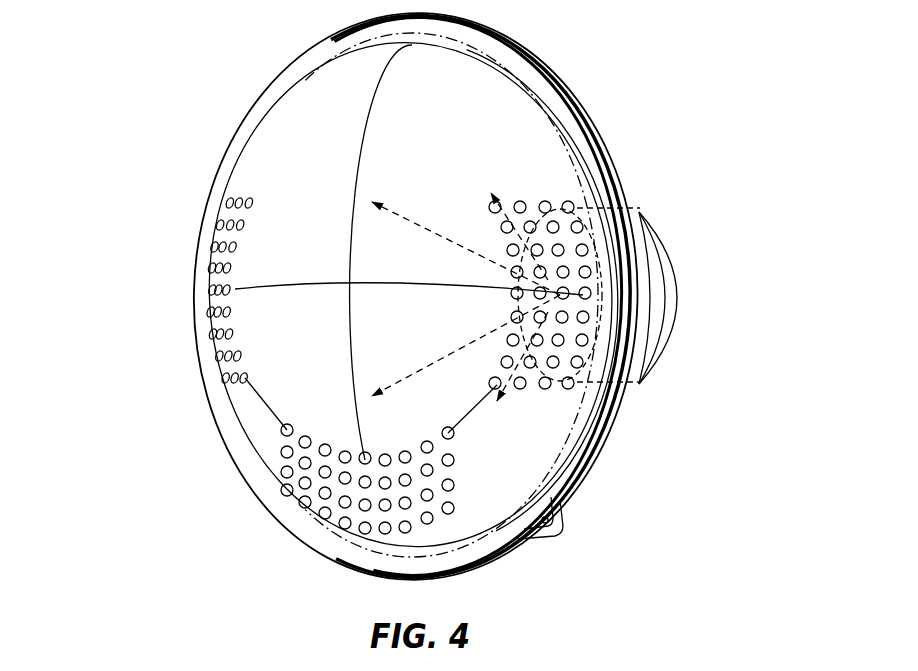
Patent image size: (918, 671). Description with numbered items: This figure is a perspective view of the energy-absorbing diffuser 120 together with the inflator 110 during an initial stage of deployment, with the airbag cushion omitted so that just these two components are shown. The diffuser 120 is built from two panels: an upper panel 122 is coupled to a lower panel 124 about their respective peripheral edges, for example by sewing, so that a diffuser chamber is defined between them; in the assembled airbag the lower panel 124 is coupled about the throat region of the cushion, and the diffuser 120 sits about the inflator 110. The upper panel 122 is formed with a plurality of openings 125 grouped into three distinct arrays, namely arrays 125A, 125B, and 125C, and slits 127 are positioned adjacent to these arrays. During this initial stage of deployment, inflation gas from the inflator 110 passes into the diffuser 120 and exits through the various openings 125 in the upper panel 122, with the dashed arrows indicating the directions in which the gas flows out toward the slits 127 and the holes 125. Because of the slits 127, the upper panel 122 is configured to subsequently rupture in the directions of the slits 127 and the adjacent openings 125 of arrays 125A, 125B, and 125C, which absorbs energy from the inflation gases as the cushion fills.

The diffuser 120 is at (245, 75).
The upper panel 122 is at (550, 106).
The lower panel 124 is at (598, 125).
The inflator 110 is at (667, 255).
The openings 125 is at (591, 293).
The first array of openings 125A is at (560, 195).
The second array of openings 125B is at (436, 534).
The third array of openings 125C is at (208, 268).
The slits 127 is at (265, 404).